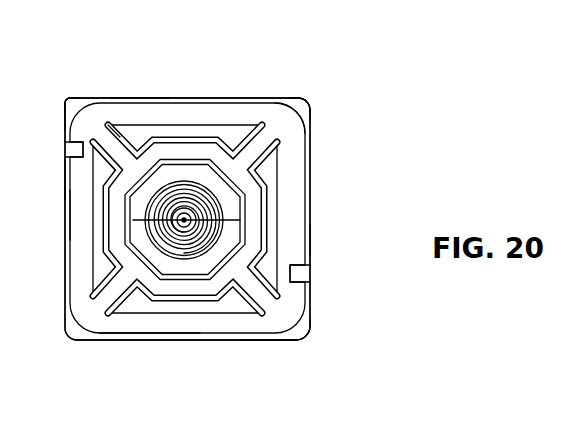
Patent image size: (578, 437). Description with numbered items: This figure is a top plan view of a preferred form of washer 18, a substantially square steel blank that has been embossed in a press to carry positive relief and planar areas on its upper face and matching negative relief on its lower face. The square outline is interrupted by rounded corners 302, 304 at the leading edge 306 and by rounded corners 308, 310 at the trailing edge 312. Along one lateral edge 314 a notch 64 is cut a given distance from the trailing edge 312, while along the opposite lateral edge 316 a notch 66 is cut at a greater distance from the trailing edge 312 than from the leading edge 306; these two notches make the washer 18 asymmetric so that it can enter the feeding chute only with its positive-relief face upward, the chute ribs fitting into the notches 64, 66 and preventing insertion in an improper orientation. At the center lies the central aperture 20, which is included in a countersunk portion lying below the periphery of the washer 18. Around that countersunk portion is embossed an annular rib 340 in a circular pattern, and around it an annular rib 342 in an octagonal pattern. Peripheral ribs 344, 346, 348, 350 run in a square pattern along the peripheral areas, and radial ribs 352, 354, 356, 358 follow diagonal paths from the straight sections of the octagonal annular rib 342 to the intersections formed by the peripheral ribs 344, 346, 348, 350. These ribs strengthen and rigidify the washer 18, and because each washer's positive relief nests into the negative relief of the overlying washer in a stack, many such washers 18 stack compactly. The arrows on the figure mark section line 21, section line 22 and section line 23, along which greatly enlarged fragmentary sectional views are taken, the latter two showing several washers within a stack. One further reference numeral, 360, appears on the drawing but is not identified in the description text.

The washer 18 is at (203, 90).
The central aperture 20 is at (193, 200).
The section line 21— 21 is at (138, 203).
The section line 22— 22 is at (146, 151).
The section line 23— 23 is at (206, 306).
The notch 64 is at (72, 156).
The notch 66 is at (292, 278).
The rounded corner 302 is at (66, 340).
The rounded corner 304 is at (296, 341).
The leading edge 306 is at (262, 345).
The rounded corner 308 is at (72, 96).
The rounded corner 310 is at (307, 100).
The trailing edge 312 is at (165, 97).
The lateral edge 314 is at (66, 177).
The lateral edge 316 is at (310, 240).
The annular rib 340 is at (212, 196).
The annular rib 342 is at (199, 143).
The peripheral rib 344 is at (128, 326).
The peripheral rib 346 is at (302, 196).
The peripheral rib 348 is at (139, 100).
The peripheral rib 350 is at (72, 214).
The radial rib 352 is at (113, 286).
The radial rib 354 is at (268, 301).
The radial rib 356 is at (302, 130).
The radial rib 358 is at (106, 137).
The housing 360 is at (2, 122).